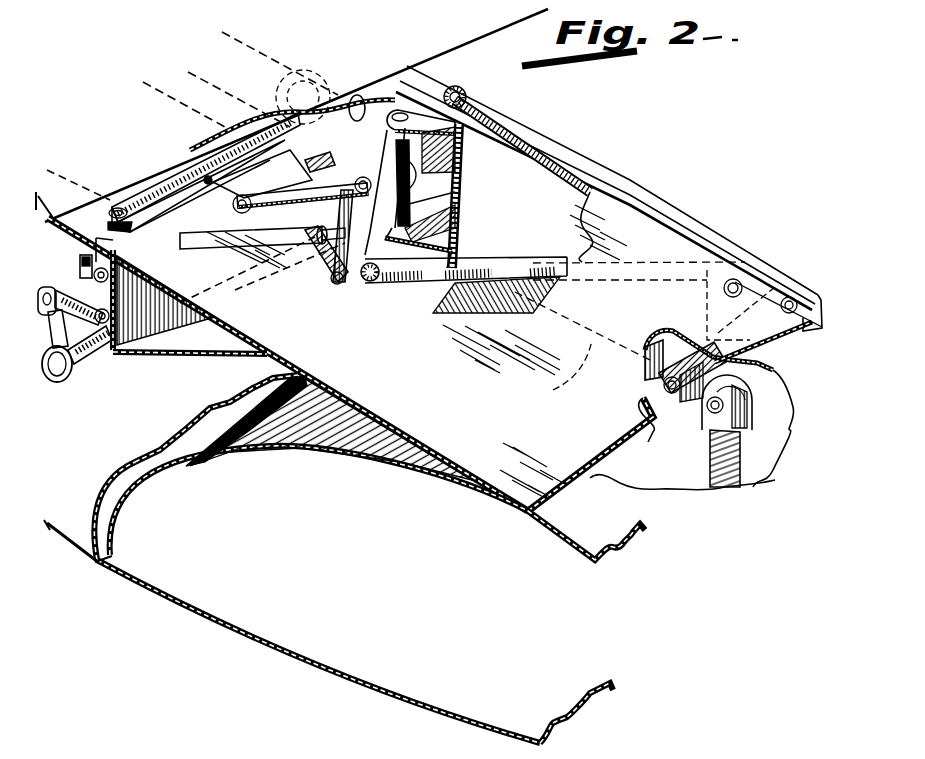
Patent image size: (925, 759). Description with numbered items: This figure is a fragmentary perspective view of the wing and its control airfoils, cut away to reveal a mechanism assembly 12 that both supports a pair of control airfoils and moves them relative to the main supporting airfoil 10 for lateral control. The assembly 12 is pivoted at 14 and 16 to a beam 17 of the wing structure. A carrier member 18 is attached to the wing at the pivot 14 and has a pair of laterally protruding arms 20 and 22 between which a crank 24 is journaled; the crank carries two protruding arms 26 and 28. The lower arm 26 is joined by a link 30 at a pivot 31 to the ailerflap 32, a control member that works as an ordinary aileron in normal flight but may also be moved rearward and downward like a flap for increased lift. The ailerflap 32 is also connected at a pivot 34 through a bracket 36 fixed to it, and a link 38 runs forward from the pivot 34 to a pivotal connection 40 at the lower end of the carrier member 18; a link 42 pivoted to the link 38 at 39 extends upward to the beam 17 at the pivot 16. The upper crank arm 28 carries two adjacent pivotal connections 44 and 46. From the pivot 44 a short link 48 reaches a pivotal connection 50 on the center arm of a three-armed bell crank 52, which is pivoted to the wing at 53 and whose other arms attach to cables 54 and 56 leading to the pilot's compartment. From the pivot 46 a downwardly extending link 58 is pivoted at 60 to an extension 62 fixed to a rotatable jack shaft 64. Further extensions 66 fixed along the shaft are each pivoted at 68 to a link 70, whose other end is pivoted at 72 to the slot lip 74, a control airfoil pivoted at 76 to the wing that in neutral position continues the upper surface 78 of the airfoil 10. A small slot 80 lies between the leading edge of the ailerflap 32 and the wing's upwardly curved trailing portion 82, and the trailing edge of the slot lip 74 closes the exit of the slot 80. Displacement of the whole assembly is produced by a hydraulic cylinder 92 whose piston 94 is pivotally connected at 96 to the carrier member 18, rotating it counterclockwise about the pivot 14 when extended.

The main supporting airfoil 10 is at (78, 558).
The mechanism assembly 12 is at (482, 154).
The pivot 14 is at (462, 92).
The pivot 16 is at (791, 295).
The beam 17 is at (676, 206).
The carrier member 18 is at (455, 215).
The laterally protruding arm 20 is at (406, 108).
The laterally protruding arm 22 is at (390, 287).
The crank 24 is at (457, 208).
The crank arm 26 is at (370, 287).
The upper crank arm 28 is at (362, 113).
The link 30 is at (504, 265).
The pivot 31 is at (752, 268).
The ailerflap 32 is at (267, 643).
The pivot 34 is at (709, 412).
The bracket 36 is at (710, 458).
The link 38 is at (558, 388).
The pivot 39 is at (643, 397).
The pivotal connection 40 is at (397, 285).
The link 42 is at (672, 331).
The pivotal connection 44 is at (318, 173).
The pivotal connection 46 is at (354, 176).
The short link 48 is at (292, 188).
The pivotal connection 50 is at (233, 204).
The three-armed bell crank 52 is at (163, 217).
The pivot 53 is at (209, 177).
The cable 54 is at (62, 173).
The cable 56 is at (200, 113).
The link 58 is at (337, 213).
The pivot 60 is at (335, 278).
The extension 62 is at (310, 278).
The jack shaft 64 is at (106, 360).
The extension 66 is at (58, 382).
The pivot 68 is at (54, 286).
The link 70 is at (82, 284).
The pivot 72 is at (157, 337).
The slot lip 74 is at (272, 364).
The pivot 76 is at (140, 263).
The upper surface 78 is at (40, 214).
The slot 80 is at (103, 570).
The upwardly curved portion 82 is at (97, 493).
The hydraulic cylinder 92 is at (284, 60).
The piston 94 is at (327, 78).
The pivotal connection 96 is at (447, 181).